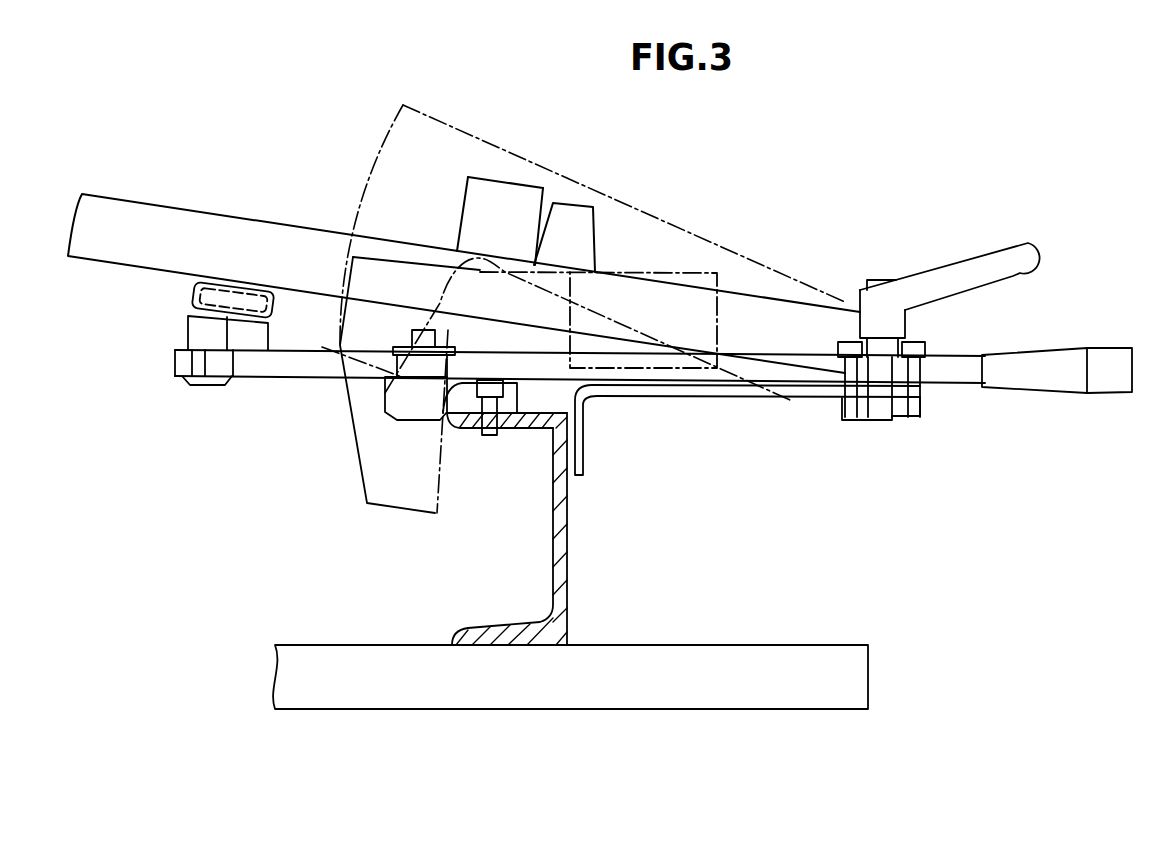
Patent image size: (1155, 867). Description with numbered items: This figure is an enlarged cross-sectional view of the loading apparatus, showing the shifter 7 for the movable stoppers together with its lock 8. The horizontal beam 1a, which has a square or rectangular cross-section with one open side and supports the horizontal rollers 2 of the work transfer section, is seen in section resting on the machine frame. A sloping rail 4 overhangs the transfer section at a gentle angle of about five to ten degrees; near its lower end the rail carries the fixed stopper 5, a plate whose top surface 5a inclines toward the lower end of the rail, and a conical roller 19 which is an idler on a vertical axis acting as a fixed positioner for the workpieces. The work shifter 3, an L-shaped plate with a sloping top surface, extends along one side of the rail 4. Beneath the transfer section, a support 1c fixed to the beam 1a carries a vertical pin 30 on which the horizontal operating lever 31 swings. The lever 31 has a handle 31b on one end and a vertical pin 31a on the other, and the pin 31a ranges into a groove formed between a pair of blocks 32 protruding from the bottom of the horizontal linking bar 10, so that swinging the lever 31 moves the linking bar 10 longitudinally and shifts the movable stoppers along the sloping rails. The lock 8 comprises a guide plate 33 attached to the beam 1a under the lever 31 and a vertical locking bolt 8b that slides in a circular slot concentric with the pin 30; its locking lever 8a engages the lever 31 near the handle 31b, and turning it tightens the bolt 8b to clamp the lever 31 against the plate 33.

The horizontal beam 1a is at (572, 555).
The support 1c is at (430, 400).
The horizontal rollers 2 is at (719, 283).
The work shifter 3 is at (698, 165).
The sloping rail 4 is at (173, 230).
The fixed stopper 5 is at (482, 203).
The top surface of the fixed stopper 5a is at (517, 180).
The shifter 7 is at (1067, 395).
The lock 8 is at (1020, 243).
The locking lever 8a is at (957, 280).
The locking bolt 8b is at (930, 365).
The horizontal linking bar 10 is at (192, 288).
The conical roller 19 is at (569, 218).
The vertical pin 30 is at (385, 393).
The horizontal operating lever 31 is at (302, 365).
The vertical pin 31a is at (207, 390).
The handle 31b is at (1047, 372).
The blocks 32 is at (187, 328).
The guide plate 33 is at (675, 390).